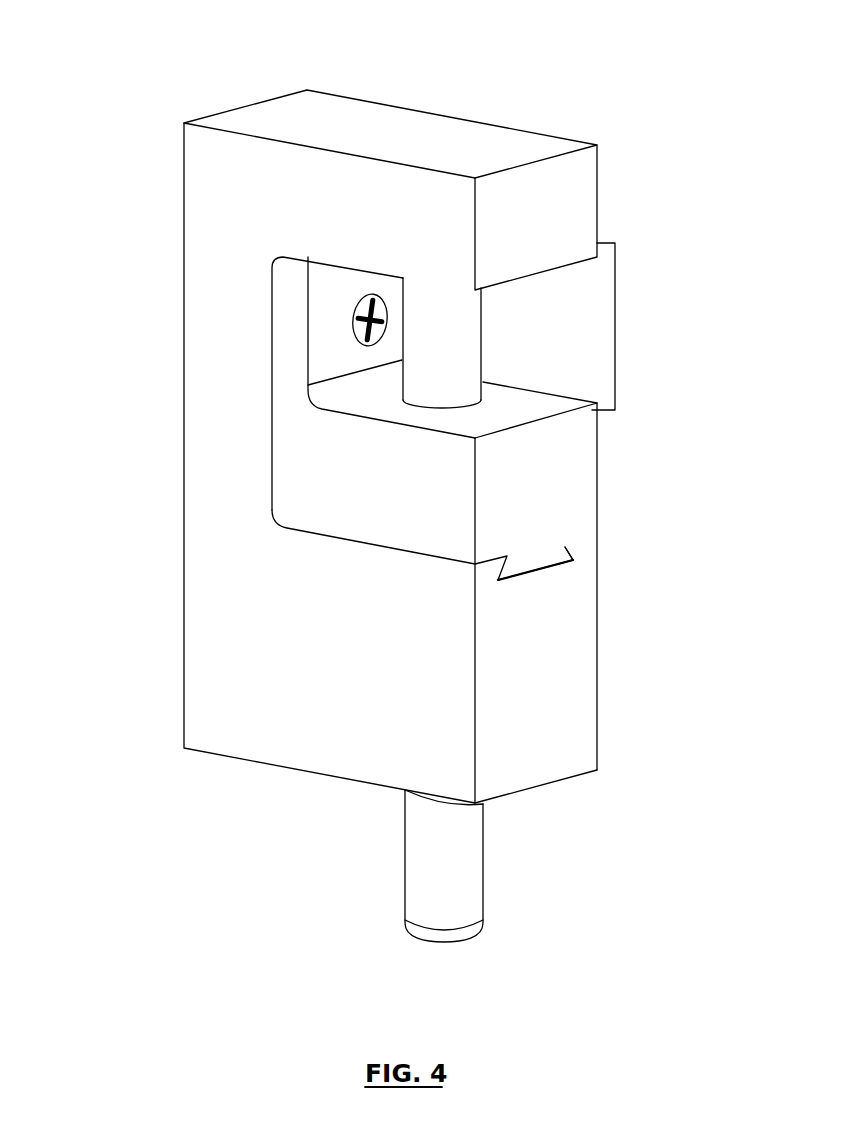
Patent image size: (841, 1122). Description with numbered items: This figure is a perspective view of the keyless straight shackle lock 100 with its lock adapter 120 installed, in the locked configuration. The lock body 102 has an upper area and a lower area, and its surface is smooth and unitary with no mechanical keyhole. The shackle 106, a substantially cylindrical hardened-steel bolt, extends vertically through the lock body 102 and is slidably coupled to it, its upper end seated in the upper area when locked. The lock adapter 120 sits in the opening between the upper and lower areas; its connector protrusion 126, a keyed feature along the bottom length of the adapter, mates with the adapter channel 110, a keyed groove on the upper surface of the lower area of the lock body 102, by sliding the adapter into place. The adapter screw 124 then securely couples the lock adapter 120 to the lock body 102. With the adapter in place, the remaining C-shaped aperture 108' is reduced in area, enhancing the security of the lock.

The keyless straight shackle lock 100 is at (78, 80).
The lock body 102 is at (490, 136).
The lock adapter 120 is at (575, 445).
The shackle 106 is at (470, 326).
The reduced C-shaped aperture 108' is at (634, 326).
The adapter screw 124 is at (345, 329).
The connector protrusion 126 is at (569, 540).
The adapter channel 110 is at (583, 570).